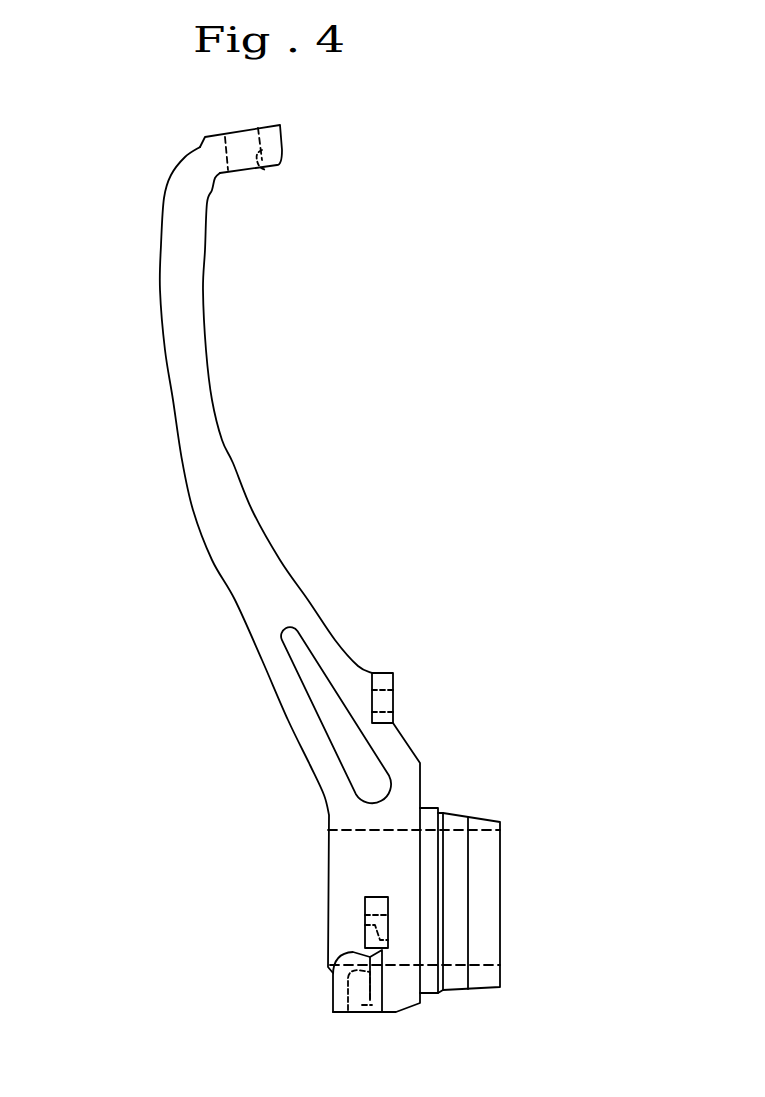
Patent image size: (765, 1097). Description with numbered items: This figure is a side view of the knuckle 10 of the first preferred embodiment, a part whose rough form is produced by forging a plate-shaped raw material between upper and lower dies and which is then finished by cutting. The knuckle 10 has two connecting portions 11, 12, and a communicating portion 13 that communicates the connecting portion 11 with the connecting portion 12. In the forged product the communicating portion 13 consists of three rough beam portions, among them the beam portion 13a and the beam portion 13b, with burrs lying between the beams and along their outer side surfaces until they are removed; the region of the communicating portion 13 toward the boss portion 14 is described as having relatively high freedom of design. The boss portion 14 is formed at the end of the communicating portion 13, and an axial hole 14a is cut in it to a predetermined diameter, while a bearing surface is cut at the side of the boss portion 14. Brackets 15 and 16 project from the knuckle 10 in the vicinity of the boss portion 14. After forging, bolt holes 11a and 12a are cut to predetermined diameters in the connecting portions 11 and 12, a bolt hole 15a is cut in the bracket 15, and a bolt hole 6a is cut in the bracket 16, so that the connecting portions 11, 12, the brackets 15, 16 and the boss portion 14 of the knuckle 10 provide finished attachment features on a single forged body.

The knuckle 10 is at (126, 270).
The connecting portion 11 is at (273, 143).
The bolt hole 11a is at (258, 153).
The connecting portion 12 is at (342, 1012).
The bolt hole 12a is at (360, 1012).
The communicating portion 13 is at (218, 473).
The beam portion 13a is at (387, 738).
The beam portion 13b is at (313, 737).
The boss portion 14 is at (487, 893).
The axial hole 14a is at (482, 965).
The bracket 15 is at (384, 683).
The bolt hole 15a is at (393, 697).
The bracket 16 is at (365, 903).
The bolt hole 6a is at (365, 925).